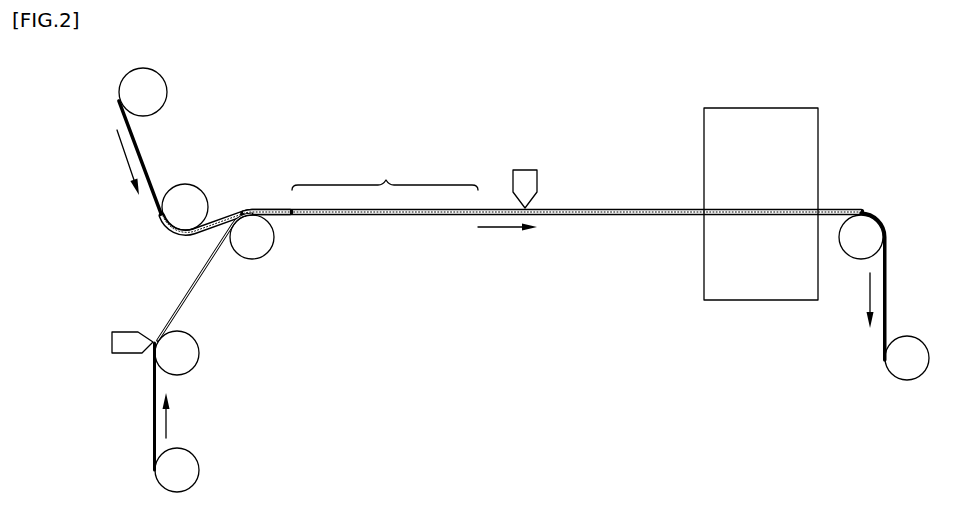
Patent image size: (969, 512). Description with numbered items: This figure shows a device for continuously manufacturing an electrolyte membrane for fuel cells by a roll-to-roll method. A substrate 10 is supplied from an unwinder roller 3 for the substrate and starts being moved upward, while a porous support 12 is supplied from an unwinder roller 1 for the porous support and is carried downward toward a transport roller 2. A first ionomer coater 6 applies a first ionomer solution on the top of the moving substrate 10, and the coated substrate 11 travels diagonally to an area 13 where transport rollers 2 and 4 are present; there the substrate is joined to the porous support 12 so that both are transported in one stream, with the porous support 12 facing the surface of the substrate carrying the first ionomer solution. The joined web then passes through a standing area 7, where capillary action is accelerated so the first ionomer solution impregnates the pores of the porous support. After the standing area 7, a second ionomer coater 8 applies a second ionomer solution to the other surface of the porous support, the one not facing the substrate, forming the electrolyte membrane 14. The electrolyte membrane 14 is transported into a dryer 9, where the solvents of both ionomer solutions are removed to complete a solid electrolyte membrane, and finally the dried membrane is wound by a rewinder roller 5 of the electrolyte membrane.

The unwinder roller for the porous support 1 is at (167, 91).
The transport roller 2 is at (196, 189).
The unwinder roller for the substrate 3 is at (199, 467).
The transport roller 4 is at (268, 253).
The rewinder roller 5 is at (907, 336).
The first ionomer coater 6 is at (125, 332).
The standing area 7 is at (385, 175).
The second ionomer coater 8 is at (524, 170).
The dryer 9 is at (818, 122).
The substrate 10 is at (153, 420).
The film with adhesive layer 11 is at (192, 277).
The porous support 12 is at (143, 160).
The joining area 13 is at (262, 210).
The electrolyte membrane 14 is at (613, 207).